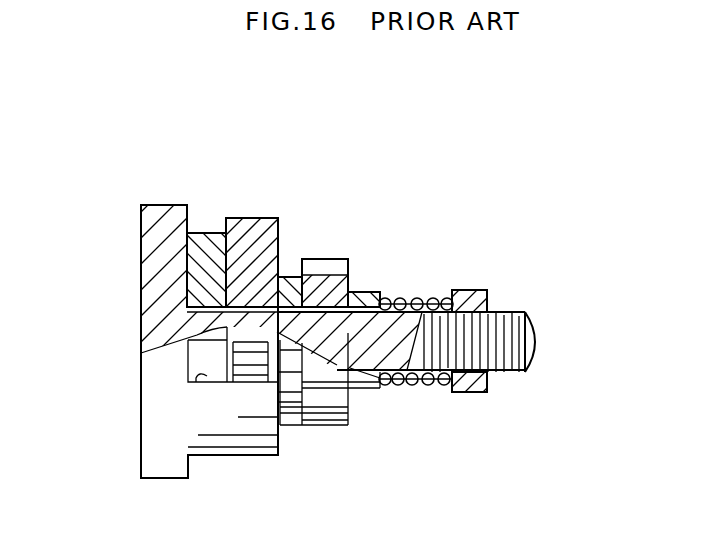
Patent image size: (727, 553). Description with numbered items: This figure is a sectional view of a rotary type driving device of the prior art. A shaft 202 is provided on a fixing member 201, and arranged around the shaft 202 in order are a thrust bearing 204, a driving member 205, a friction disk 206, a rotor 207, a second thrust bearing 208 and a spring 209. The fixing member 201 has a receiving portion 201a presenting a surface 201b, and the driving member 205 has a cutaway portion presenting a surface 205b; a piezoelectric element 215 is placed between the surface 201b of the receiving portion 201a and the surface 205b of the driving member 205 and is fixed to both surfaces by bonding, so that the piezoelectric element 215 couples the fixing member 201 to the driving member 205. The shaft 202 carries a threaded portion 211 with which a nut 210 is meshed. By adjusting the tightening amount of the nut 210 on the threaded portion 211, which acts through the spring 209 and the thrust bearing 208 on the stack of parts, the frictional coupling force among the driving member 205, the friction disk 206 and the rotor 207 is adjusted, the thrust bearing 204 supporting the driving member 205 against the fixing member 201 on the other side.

The fixing member 201 is at (143, 213).
The receiving portion 201a is at (212, 435).
The surface of receiving portion 201b is at (197, 375).
The shaft 202 is at (517, 343).
The thrust bearing 204 is at (208, 232).
The driving member 205 is at (262, 228).
The surface of cutaway portion 205b is at (227, 352).
The friction disk 206 is at (290, 277).
The rotor 207 is at (330, 259).
The thrust bearing 208 is at (383, 290).
The spring 209 is at (430, 383).
The nut 210 is at (472, 290).
The threaded portion 211 is at (503, 313).
The piezoelectric element 215 is at (257, 387).